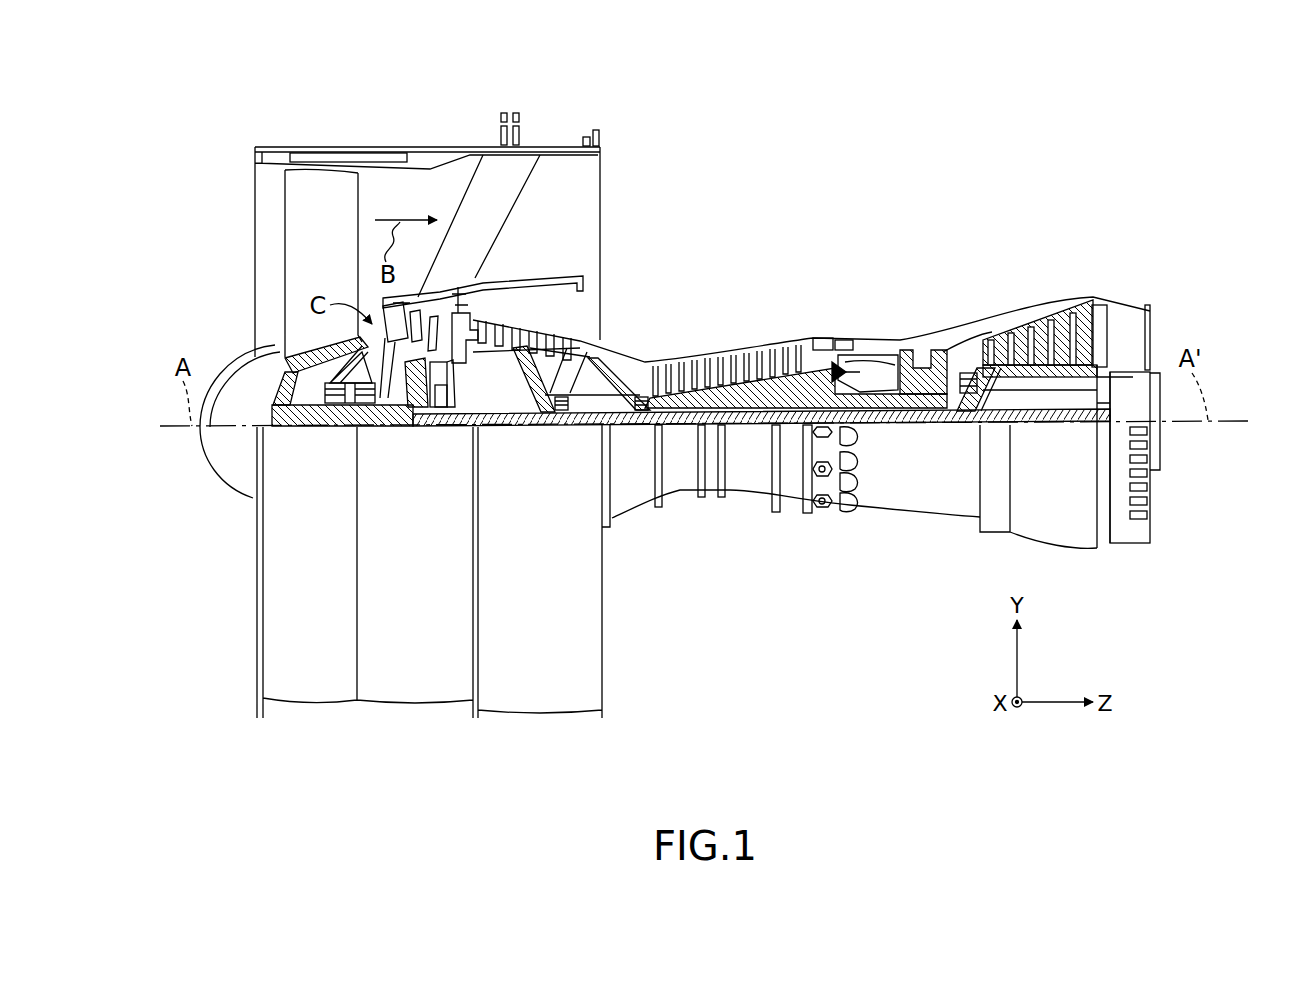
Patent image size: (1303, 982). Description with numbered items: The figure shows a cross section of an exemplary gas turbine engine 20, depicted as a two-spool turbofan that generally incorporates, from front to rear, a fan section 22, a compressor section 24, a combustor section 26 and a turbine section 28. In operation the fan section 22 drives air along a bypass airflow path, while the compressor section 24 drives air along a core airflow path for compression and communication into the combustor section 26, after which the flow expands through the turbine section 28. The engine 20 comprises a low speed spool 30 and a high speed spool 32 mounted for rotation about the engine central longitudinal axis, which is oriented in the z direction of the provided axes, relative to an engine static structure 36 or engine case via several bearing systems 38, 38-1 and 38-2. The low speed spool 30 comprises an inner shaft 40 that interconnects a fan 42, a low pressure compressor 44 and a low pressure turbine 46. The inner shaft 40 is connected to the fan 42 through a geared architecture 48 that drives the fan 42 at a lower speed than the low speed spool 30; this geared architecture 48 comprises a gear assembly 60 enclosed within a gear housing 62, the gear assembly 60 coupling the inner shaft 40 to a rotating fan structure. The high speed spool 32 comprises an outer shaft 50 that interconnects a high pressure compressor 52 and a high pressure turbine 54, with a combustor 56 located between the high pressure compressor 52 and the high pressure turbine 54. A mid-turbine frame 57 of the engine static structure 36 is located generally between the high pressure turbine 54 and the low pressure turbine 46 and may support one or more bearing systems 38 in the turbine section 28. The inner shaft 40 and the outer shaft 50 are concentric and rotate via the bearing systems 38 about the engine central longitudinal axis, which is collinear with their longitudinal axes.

The gas turbine engine 20 is at (900, 142).
The fan section 22 is at (447, 131).
The compressor section 24 is at (473, 243).
The combustor section 26 is at (905, 243).
The turbine section 28 is at (1095, 243).
The low speed spool 30 is at (754, 435).
The high speed spool 32 is at (797, 383).
The engine static structure 36 is at (790, 487).
The bearing system 38 is at (963, 395).
The bearing system 38-1 is at (333, 427).
The bearing system 38-2 is at (560, 425).
The inner shaft 40 is at (622, 425).
The fan 42 is at (299, 275).
The low pressure compressor 44 is at (540, 333).
The low pressure turbine 46 is at (1042, 325).
The geared architecture 48 is at (430, 458).
The outer shaft 50 is at (847, 410).
The high pressure compressor 52 is at (770, 390).
The high pressure turbine 54 is at (920, 347).
The combustor 56 is at (847, 367).
The mid-turbine frame 57 is at (963, 343).
The gear assembly 60 is at (447, 398).
The gear housing 62 is at (447, 375).